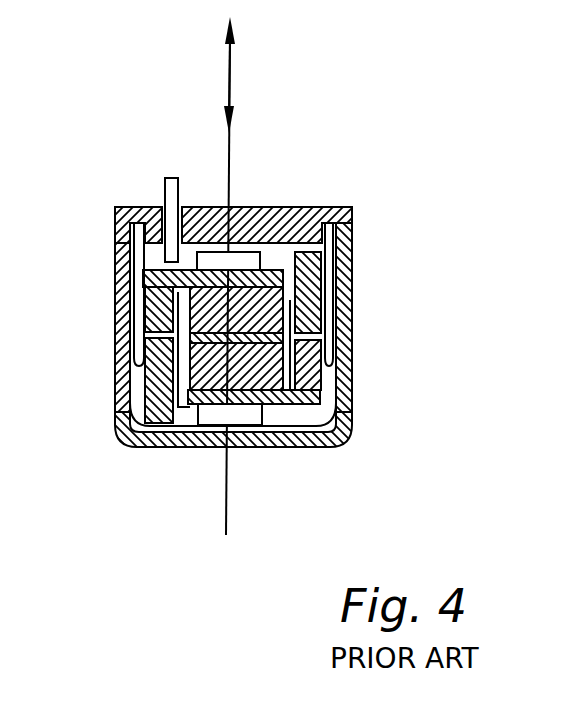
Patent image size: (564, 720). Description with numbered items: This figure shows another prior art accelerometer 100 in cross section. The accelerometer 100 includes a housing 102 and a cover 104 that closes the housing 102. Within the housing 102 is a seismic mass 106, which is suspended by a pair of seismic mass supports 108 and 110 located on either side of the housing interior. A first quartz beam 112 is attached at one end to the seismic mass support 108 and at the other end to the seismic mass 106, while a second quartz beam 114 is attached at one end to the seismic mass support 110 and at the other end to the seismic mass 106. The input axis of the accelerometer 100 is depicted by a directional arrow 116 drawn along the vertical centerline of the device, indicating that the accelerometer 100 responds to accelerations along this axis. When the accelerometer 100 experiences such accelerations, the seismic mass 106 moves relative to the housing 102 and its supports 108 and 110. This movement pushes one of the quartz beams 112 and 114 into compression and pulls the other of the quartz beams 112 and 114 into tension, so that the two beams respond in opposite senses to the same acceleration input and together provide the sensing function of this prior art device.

The prior art accelerometer 100 is at (458, 157).
The housing 102 is at (293, 291).
The cover 104 is at (277, 208).
The seismic mass 106 is at (192, 287).
The seismic mass support 108 is at (318, 371).
The seismic mass support 110 is at (183, 372).
The first quartz beam 112 is at (323, 297).
The second quartz beam 114 is at (182, 316).
The directional arrow 116 is at (232, 65).